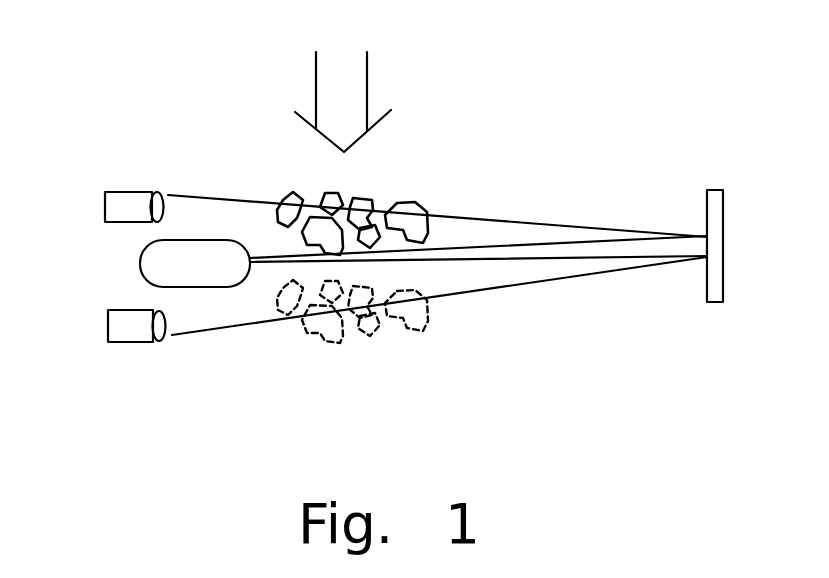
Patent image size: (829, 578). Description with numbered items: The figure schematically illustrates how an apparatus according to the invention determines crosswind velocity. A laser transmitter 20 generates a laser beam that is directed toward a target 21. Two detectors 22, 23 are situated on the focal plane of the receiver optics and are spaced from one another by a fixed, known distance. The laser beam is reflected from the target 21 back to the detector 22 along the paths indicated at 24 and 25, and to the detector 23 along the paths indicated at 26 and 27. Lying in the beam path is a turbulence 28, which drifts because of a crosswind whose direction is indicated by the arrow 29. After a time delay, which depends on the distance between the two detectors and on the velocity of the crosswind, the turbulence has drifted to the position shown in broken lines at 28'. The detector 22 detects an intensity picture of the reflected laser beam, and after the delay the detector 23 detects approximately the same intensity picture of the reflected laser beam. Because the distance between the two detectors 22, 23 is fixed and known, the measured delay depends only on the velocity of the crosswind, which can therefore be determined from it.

The laser transmitter 20 is at (158, 257).
The target 21 is at (717, 240).
The detector 22 is at (106, 201).
The detector 23 is at (107, 332).
The reflected laser beam path 24 is at (597, 305).
The reflected laser beam path 25 is at (490, 217).
The reflected laser beam path 26 is at (478, 293).
The reflected laser beam path 27 is at (490, 290).
The turbulence 28 is at (388, 173).
The turbulence in drifted position 28' is at (391, 353).
The arrow 29 is at (348, 112).